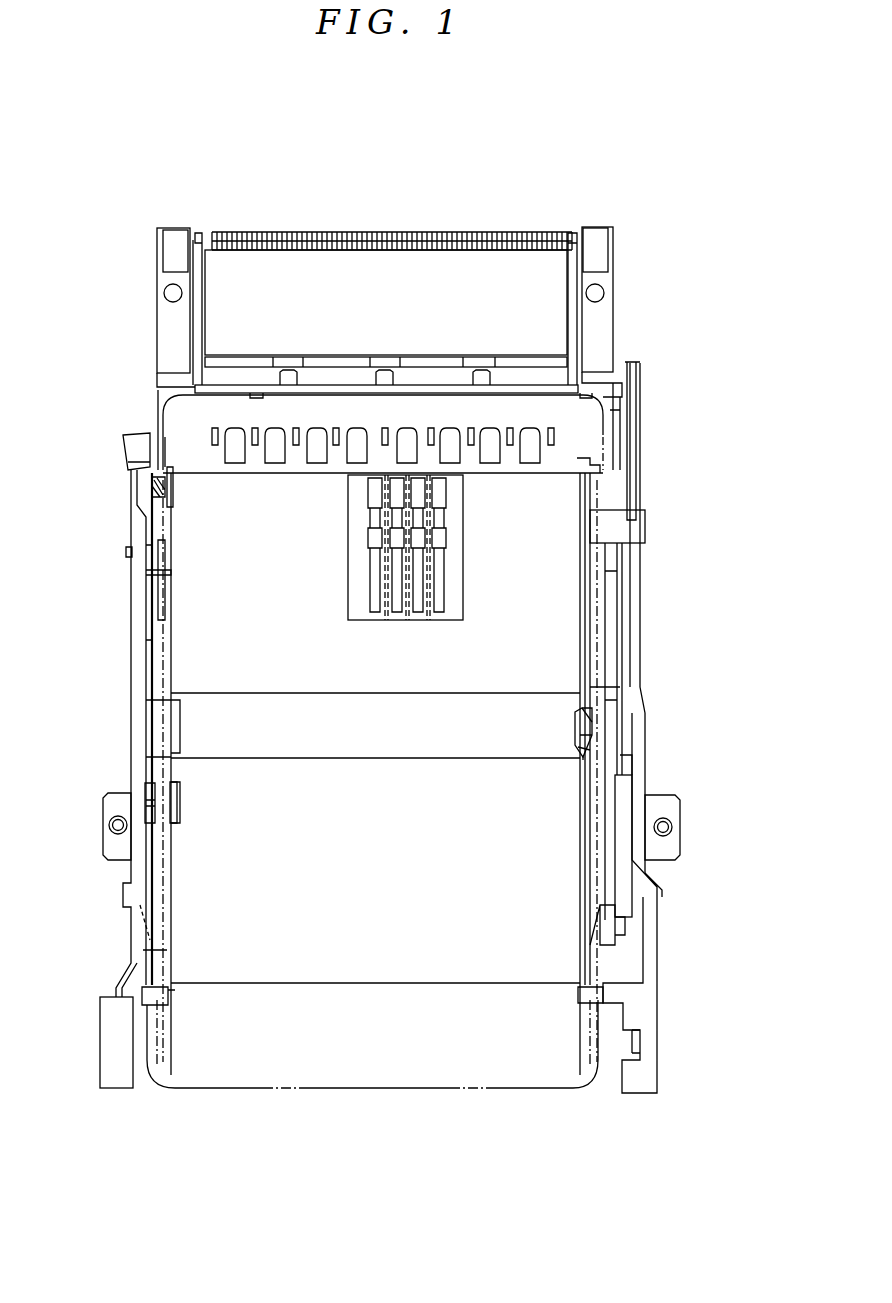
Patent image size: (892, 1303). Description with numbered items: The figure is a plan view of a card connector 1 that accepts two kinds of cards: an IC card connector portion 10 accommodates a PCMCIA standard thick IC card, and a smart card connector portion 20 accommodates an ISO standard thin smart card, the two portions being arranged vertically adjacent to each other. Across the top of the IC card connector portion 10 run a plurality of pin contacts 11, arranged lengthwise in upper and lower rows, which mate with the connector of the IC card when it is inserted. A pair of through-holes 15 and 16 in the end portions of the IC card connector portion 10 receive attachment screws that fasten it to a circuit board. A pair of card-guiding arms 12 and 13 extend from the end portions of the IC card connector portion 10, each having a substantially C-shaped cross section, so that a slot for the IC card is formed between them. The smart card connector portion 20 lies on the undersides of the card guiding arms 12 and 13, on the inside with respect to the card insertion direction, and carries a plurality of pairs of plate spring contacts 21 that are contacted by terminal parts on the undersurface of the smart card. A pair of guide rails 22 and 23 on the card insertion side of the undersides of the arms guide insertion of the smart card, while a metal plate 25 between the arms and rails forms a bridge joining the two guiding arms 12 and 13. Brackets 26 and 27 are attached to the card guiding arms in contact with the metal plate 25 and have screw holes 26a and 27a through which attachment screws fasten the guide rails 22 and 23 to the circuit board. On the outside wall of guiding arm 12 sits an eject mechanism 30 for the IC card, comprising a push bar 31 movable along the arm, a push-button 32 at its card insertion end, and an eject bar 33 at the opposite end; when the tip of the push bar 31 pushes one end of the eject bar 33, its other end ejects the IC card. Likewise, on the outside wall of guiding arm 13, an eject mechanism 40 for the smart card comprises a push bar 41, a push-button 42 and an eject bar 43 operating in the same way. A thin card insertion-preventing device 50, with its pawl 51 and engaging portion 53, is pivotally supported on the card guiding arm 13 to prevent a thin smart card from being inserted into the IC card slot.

The card connector 1 is at (552, 185).
The IC card connector portion 10 is at (486, 290).
The pin contacts 11 is at (392, 232).
The card-guiding arm 12 is at (155, 713).
The card-guiding arm 13 is at (603, 706).
The through-hole 15 is at (164, 293).
The through-hole 16 is at (605, 293).
The smart card connector portion 20 is at (307, 668).
The plate spring contacts 21 is at (370, 545).
The guide rail 22 is at (150, 1073).
The guide rail 23 is at (596, 1067).
The metal plate 25 is at (402, 775).
The bracket 26 is at (112, 850).
The screw hole 26a is at (108, 826).
The bracket 27 is at (666, 848).
The screw hole 27a is at (668, 826).
The eject mechanism 30 is at (112, 648).
The push bar 31 is at (133, 614).
The push-button 32 is at (105, 1053).
The eject bar 33 is at (136, 447).
The eject mechanism 40 is at (652, 608).
The push bar 41 is at (646, 732).
The push-button 42 is at (645, 1067).
The eject bar 43 is at (620, 378).
The thin card insertion-preventing device 50 is at (557, 719).
The locking pawl 51 is at (565, 733).
The engaging portion 53 is at (578, 748).